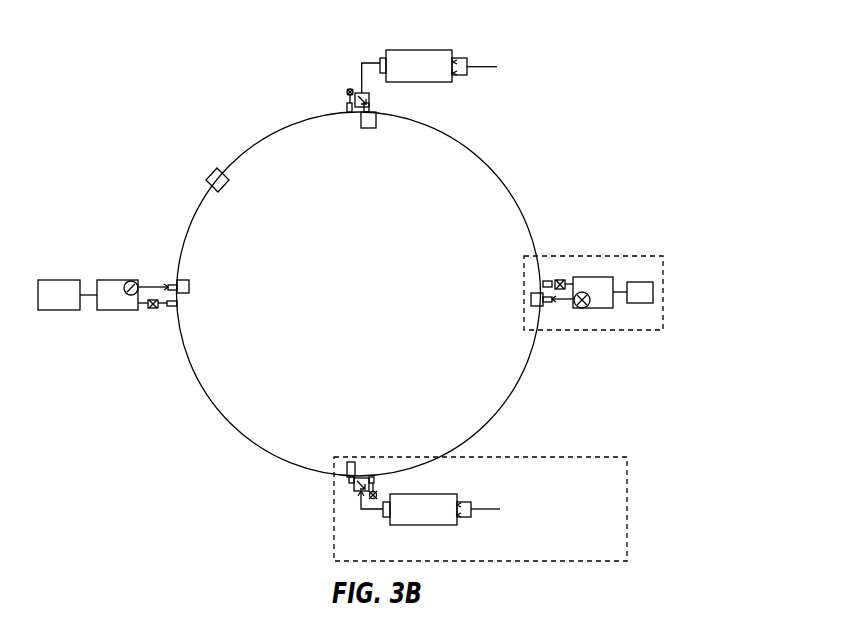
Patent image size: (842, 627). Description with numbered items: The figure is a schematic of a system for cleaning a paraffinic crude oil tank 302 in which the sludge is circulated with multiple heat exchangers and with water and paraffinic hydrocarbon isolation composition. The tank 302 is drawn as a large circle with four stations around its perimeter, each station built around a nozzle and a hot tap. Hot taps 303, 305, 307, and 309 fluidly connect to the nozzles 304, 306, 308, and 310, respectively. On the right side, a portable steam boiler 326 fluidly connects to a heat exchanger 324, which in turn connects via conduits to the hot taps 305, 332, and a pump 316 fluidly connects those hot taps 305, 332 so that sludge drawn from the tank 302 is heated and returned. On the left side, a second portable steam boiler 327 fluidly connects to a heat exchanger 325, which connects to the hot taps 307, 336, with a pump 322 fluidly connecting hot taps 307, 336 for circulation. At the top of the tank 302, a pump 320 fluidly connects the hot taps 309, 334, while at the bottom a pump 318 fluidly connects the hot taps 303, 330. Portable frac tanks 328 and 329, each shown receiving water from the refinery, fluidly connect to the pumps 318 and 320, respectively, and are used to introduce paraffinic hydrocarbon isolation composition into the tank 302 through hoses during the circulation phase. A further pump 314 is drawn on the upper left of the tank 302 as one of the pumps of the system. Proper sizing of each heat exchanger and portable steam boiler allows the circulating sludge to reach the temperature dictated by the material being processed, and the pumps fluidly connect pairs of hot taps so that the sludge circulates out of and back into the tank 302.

The tank 302 is at (377, 304).
The hot tap 303 is at (353, 482).
The nozzle 304 is at (351, 462).
The hot tap 305 is at (548, 303).
The nozzle 306 is at (531, 301).
The hot tap 307 is at (172, 285).
The nozzle 308 is at (190, 285).
The hot tap 309 is at (370, 108).
The nozzle 310 is at (372, 128).
The pump 314 is at (211, 174).
The pump 316 is at (562, 280).
The pump 318 is at (377, 495).
The pump 320 is at (348, 90).
The pump 322 is at (152, 309).
The heat exchanger 324 is at (593, 277).
The heat exchanger 325 is at (130, 281).
The portable steam boiler 326 is at (653, 292).
The portable steam boiler 327 is at (53, 311).
The frac tank 328 is at (425, 526).
The frac tank 329 is at (440, 50).
The hot tap 330 is at (372, 477).
The hot tap 332 is at (543, 283).
The hot tap 334 is at (347, 108).
The hot tap 336 is at (178, 308).